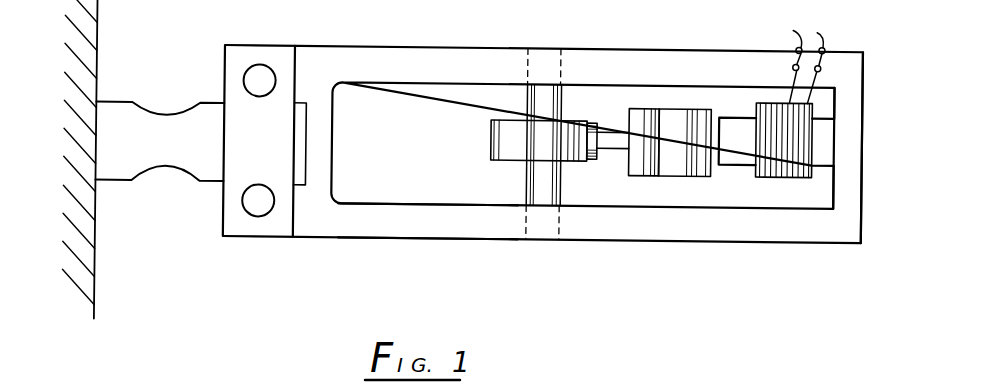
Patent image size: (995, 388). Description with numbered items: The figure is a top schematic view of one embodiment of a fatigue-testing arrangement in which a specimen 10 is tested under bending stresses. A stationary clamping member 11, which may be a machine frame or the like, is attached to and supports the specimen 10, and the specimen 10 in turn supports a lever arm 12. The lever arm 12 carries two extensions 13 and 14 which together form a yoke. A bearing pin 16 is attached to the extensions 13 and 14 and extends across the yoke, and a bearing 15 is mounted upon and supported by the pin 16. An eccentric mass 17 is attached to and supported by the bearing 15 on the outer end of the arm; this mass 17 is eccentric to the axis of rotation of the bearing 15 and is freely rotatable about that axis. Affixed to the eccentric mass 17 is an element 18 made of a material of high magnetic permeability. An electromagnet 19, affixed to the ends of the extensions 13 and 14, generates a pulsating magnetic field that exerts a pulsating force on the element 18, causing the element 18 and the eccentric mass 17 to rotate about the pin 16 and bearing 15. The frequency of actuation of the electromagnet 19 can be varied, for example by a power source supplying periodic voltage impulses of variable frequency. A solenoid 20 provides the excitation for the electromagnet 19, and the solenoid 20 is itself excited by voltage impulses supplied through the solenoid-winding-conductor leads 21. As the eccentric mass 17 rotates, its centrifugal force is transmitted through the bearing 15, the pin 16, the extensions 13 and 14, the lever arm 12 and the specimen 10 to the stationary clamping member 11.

The specimen 10 is at (180, 170).
The stationary clamping member 11 is at (93, 286).
The lever arm 12 is at (343, 221).
The extension 13 is at (400, 72).
The extension 14 is at (431, 210).
The bearing 15 is at (573, 151).
The bearing pin 16 is at (552, 106).
The eccentric mass 17 is at (635, 165).
The element of high magnetic permeability 18 is at (668, 168).
The electromagnet 19 is at (855, 135).
The solenoid 20 is at (792, 169).
The solenoid-winding-conductor leads 21 is at (808, 53).